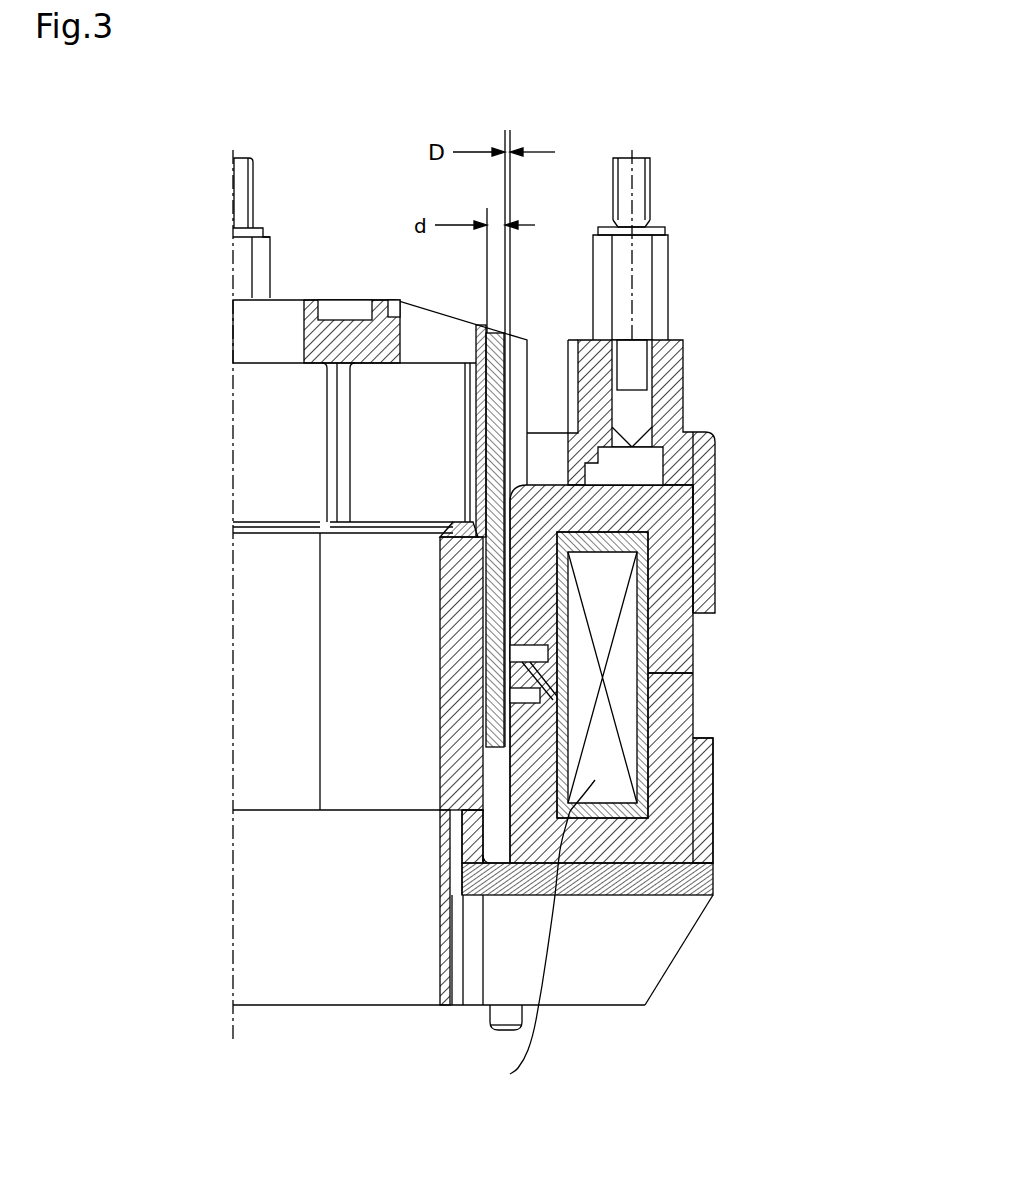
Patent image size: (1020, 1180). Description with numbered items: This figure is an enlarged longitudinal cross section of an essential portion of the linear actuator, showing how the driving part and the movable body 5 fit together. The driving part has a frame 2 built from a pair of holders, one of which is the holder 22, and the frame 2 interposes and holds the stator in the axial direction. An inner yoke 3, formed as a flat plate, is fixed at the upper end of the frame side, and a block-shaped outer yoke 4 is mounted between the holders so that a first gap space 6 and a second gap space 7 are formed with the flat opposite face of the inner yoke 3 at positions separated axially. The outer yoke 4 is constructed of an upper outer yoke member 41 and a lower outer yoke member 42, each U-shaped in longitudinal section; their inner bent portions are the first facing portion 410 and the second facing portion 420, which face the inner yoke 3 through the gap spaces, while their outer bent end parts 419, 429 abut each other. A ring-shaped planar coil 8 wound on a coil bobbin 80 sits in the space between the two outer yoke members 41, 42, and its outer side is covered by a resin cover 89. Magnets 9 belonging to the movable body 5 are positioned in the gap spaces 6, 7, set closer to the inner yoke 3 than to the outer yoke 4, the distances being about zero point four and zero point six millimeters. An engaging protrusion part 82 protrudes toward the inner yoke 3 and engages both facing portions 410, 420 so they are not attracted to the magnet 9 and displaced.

The frame 2 is at (643, 915).
The holder 22 is at (713, 882).
The inner yoke 3 is at (455, 708).
The outer yoke 4 is at (502, 788).
The outer yoke member 41 is at (693, 614).
The first facing portion 410 is at (527, 578).
The end part 419 is at (693, 659).
The outer yoke member 42 is at (693, 725).
The second facing portion 420 is at (438, 870).
The end part 429 is at (693, 686).
The movable body 5 is at (338, 286).
The first gap space 6 is at (478, 600).
The second gap space 7 is at (485, 737).
The coil 8 is at (566, 811).
The coil bobbin 80 is at (707, 433).
The engaging protrusion part 82 is at (525, 678).
The cover 89 is at (712, 530).
The magnet 9 is at (490, 652).